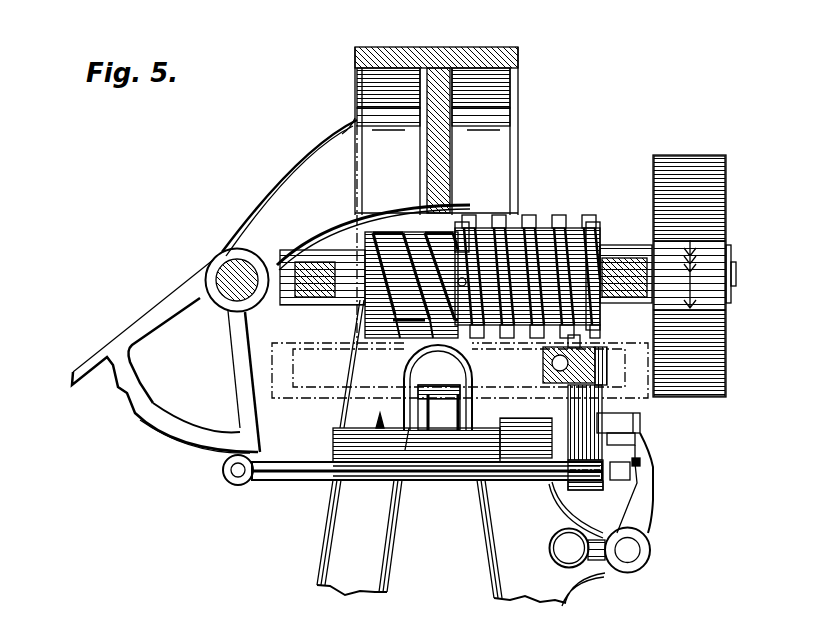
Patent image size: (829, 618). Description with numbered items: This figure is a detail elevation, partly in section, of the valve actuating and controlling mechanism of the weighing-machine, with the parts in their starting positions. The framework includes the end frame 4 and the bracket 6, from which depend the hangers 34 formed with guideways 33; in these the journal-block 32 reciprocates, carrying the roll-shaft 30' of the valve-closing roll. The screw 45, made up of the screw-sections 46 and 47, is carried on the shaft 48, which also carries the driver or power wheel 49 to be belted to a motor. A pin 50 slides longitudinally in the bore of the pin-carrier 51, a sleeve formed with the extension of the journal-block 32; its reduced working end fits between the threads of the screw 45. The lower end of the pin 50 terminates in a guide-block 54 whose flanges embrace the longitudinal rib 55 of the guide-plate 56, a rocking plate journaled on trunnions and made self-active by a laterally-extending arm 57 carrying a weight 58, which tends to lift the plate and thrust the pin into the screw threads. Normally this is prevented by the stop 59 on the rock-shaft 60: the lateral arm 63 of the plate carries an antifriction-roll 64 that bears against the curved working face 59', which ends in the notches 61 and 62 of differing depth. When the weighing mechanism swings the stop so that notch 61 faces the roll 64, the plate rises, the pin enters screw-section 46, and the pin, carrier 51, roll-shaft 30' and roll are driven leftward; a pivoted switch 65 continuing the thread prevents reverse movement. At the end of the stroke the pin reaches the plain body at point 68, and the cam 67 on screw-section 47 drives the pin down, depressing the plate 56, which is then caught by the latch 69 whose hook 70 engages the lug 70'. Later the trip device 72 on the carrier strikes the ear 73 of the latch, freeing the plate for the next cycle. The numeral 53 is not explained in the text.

The end frame 4 is at (359, 537).
The bracket 6 is at (441, 48).
The roll-shaft 30' is at (526, 361).
The journal-block 32 is at (605, 367).
The guideway 33 is at (313, 390).
The hanger 34 is at (272, 363).
The screw 45 is at (520, 262).
The screw-section 46 is at (582, 232).
The screw-section 47 is at (412, 315).
The shaft 48 is at (282, 288).
The driver or power wheel 49 is at (712, 237).
The pin 50 is at (590, 338).
The pin-carrier 51 is at (607, 395).
The base 53 is at (528, 595).
The guide-block 54 is at (590, 474).
The longitudinal rib 55 is at (467, 485).
The guide-plate 56 is at (435, 465).
The laterally-extending arm 57 is at (458, 412).
The weight 58 is at (430, 393).
The stop 59 is at (165, 356).
The working face 59' is at (195, 450).
The rock-shaft 60 is at (225, 263).
The notch 61 is at (130, 408).
The notch 62 is at (113, 373).
The lateral arm 63 is at (286, 476).
The antifriction-roll 64 is at (228, 480).
The switch 65 is at (460, 243).
The circumferential cam or bulge 67 is at (362, 330).
The plain body of screw-section 68 is at (365, 265).
The latch 69 is at (650, 505).
The hook 70 is at (658, 454).
The lug 70' is at (651, 474).
The trip device 72 is at (618, 422).
The ear 73 is at (605, 440).